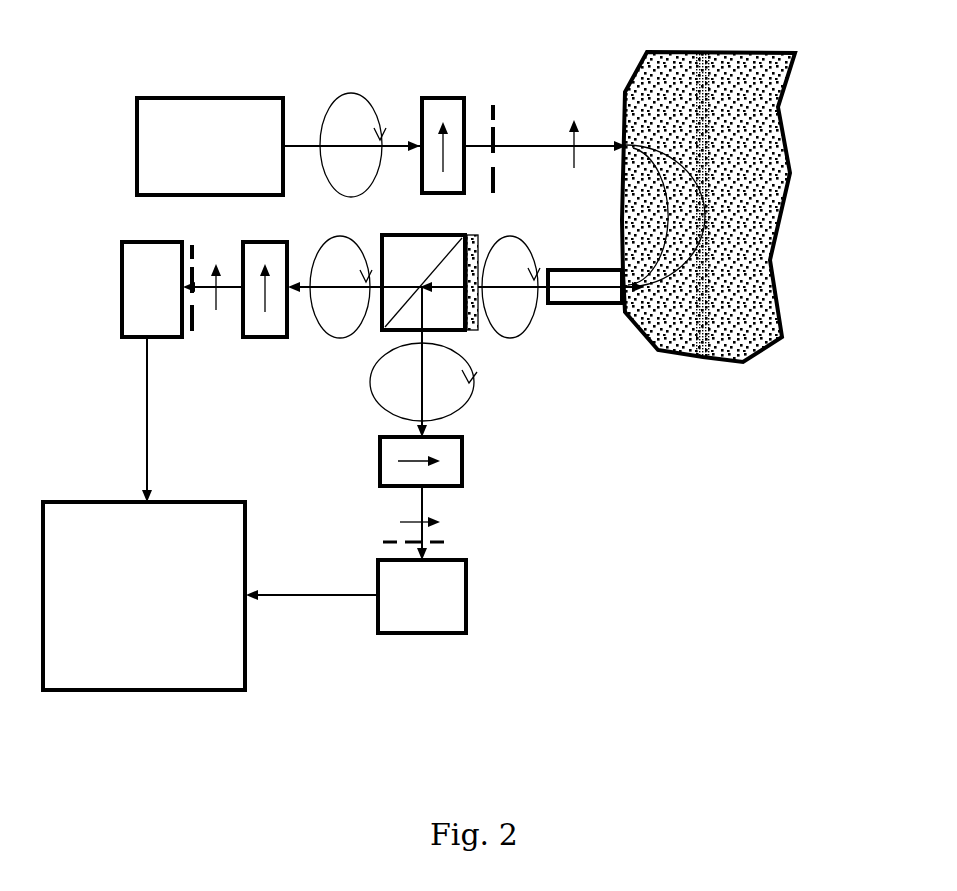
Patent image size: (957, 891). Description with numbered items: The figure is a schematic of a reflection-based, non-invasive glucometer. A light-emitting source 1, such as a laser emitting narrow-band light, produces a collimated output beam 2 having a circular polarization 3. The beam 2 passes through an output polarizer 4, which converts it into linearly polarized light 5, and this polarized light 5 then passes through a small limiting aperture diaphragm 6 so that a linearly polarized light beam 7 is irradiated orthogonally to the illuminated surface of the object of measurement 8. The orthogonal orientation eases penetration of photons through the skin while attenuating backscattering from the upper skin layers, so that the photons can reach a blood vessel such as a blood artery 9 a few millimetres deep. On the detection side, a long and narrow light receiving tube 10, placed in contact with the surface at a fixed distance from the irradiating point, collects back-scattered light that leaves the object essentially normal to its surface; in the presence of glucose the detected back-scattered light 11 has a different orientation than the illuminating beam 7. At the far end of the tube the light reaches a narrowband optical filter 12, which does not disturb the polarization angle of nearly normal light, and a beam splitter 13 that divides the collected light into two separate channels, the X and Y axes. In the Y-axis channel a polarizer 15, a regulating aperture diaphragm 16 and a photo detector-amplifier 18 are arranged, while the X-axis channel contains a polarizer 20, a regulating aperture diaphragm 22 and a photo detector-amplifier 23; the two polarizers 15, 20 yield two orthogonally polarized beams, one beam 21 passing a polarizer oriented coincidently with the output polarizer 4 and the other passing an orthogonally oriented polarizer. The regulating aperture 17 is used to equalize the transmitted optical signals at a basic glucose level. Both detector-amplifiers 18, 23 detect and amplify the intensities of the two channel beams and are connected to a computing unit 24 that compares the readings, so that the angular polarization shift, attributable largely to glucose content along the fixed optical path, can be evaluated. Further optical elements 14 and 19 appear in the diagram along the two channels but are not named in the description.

The light-emitting source 1 is at (133, 88).
The collimated output beam 2 is at (315, 130).
The circular polarization 3 is at (355, 83).
The output polarizer 4 is at (439, 87).
The linearly polarized light 5 is at (483, 134).
The limiting aperture diaphragm 6 is at (510, 105).
The linearly polarized light beam 7 is at (583, 112).
The object of measurement 8 is at (772, 113).
The blood artery 9 is at (722, 186).
The light receiving tube 10 is at (569, 315).
The detected back-scattered light 11 is at (503, 302).
The narrowband optical filter 12 is at (481, 342).
The beam splitter 13 is at (450, 332).
The lens 14 is at (431, 371).
The polarizer 15 is at (469, 495).
The regulating aperture diaphragm 16 is at (428, 502).
The regulating aperture 17 is at (363, 539).
The photo detector-amplifier 18 is at (368, 613).
The lens 19 is at (324, 301).
The polarizer 20 is at (256, 349).
The light beam 21 is at (212, 299).
The regulating aperture diaphragm 22 is at (188, 349).
The photo detector-amplifier 23 is at (113, 342).
The computing unit 24 is at (131, 488).